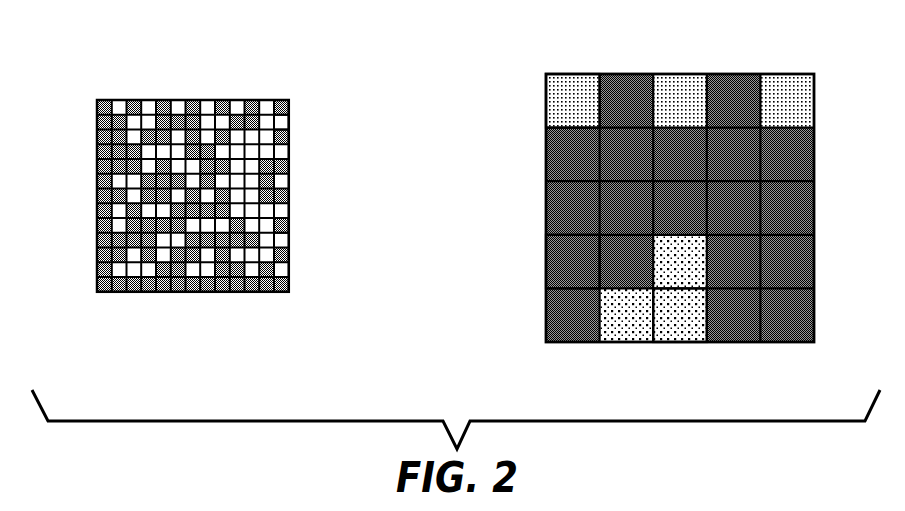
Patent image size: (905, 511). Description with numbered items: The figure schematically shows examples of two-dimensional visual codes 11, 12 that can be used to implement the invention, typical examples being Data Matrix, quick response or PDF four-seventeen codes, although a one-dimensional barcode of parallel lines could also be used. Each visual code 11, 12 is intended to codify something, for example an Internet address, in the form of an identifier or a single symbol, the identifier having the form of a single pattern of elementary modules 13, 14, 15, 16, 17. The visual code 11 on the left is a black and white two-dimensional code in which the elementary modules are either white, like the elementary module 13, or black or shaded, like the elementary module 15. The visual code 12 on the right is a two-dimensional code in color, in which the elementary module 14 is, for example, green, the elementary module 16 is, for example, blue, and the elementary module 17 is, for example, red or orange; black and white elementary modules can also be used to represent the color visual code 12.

The visual code 11 is at (86, 68).
The visual code 12 is at (546, 48).
The elementary module 13 is at (287, 123).
The elementary module 15 is at (287, 225).
The elementary module 14 is at (568, 103).
The elementary module 16 is at (568, 266).
The elementary module 17 is at (683, 323).